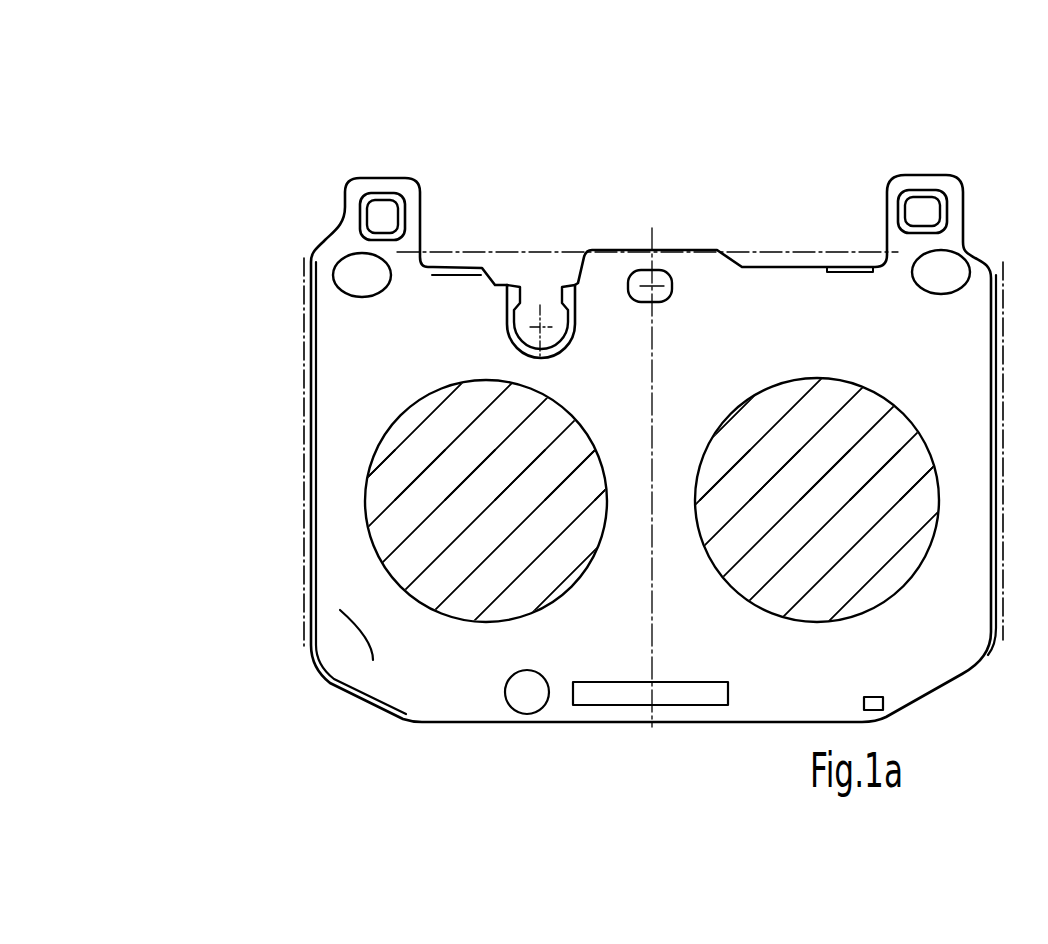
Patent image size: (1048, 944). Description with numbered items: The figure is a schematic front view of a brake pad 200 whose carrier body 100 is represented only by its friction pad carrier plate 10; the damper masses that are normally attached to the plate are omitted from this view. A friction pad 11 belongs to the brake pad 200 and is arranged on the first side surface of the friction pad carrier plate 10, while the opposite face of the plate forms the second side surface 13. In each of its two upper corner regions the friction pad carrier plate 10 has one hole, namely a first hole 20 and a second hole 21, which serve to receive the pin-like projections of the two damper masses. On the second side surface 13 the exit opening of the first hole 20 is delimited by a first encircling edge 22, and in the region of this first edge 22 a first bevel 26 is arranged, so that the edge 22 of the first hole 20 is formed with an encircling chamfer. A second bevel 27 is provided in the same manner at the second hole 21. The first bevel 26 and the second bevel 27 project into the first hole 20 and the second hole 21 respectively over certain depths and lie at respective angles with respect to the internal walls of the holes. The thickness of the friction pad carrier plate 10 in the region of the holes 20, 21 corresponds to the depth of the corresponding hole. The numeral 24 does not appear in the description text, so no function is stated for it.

The brake pad 200 is at (272, 185).
The carrier body 100 is at (405, 675).
The friction pad carrier plate 10 is at (357, 638).
The friction pad 11 is at (1047, 226).
The second side surface 13 is at (462, 690).
The first hole 20 is at (927, 210).
The second hole 21 is at (377, 212).
The first encircling edge 22 is at (900, 217).
The left holding lug opening 24 is at (362, 218).
The first bevel 26 is at (902, 195).
The second bevel 27 is at (379, 207).